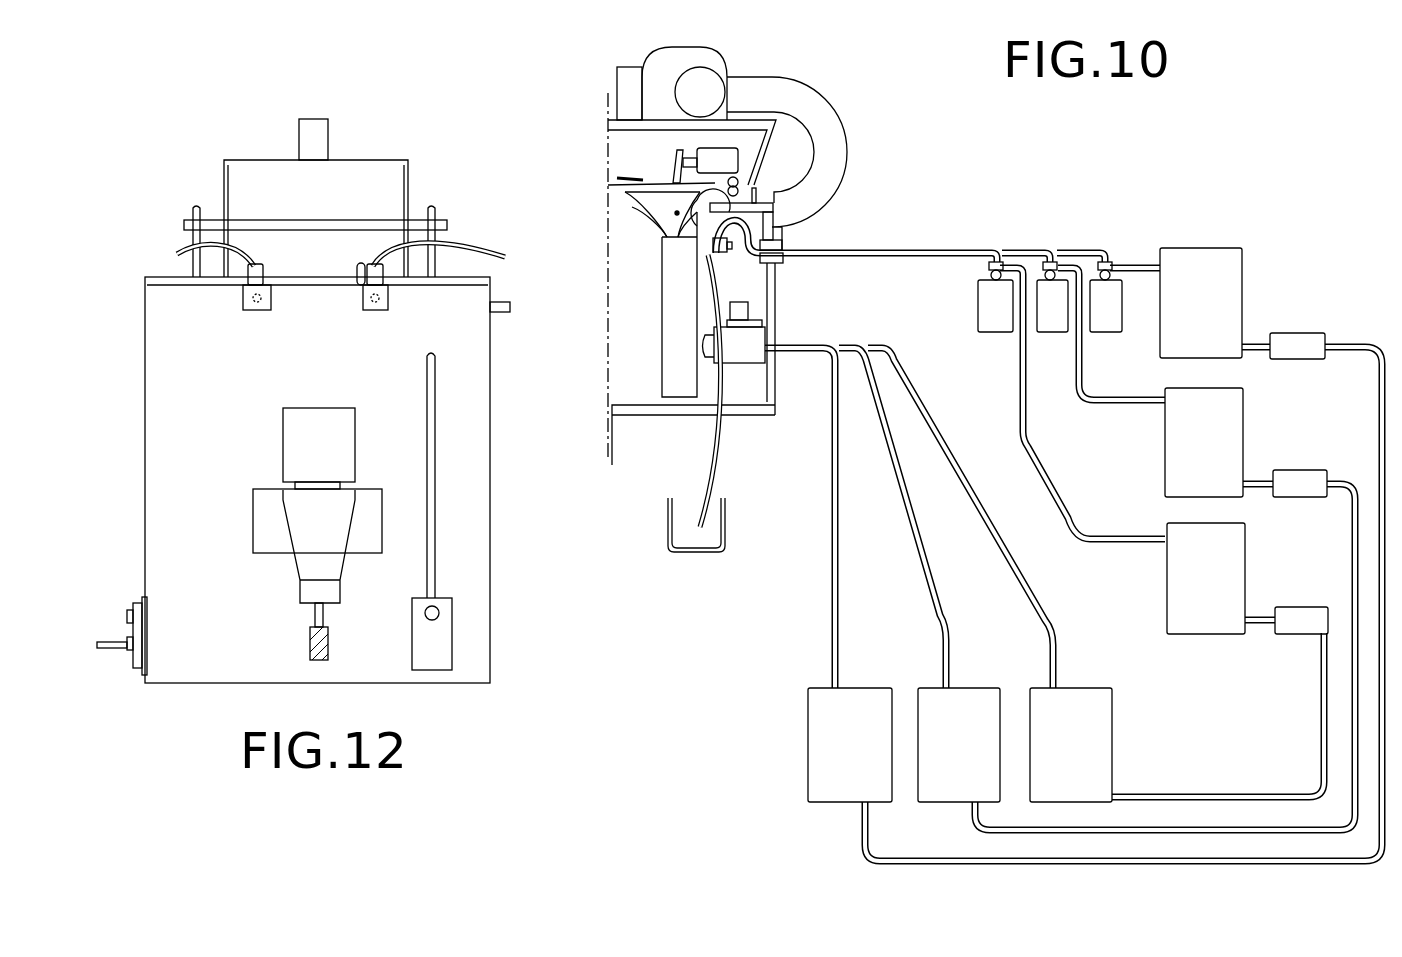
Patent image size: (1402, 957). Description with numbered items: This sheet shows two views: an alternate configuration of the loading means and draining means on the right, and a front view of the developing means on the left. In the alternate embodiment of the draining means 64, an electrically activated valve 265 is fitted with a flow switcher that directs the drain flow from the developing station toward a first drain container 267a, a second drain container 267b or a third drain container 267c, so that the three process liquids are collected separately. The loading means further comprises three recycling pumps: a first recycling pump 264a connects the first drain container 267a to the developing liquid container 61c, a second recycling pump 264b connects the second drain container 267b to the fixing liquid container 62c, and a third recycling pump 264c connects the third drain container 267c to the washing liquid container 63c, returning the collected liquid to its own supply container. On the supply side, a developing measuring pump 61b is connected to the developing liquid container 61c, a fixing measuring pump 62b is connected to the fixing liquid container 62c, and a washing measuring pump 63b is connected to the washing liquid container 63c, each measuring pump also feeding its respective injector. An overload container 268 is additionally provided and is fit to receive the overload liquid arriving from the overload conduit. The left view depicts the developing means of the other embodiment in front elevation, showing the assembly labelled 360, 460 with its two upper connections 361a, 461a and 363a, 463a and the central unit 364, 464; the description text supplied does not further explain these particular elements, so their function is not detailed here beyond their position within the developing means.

In FIG. 12, the cleaning tank assembly 360 is at (303, 401).
In FIG. 12, the cleaning tank assembly 460 is at (292, 318).
In FIG. 12, the connector 361a is at (168, 351).
In FIG. 12, the connector 461a is at (243, 302).
In FIG. 12, the connector 363a is at (475, 331).
In FIG. 12, the connector 463a is at (382, 302).
In FIG. 12, the cartridge holder 364 is at (223, 505).
In FIG. 12, the cartridge holder 464 is at (238, 505).
In FIG. 10, the draining means 64 is at (798, 389).
In FIG. 10, the electrically activated valve 265 is at (747, 352).
In FIG. 10, the overload container 268 is at (676, 527).
In FIG. 10, the developing measuring pump 61b is at (985, 300).
In FIG. 10, the fixing measuring pump 62b is at (1050, 325).
In FIG. 10, the washing measuring pump 63b is at (1106, 322).
In FIG. 10, the developing liquid container 61c is at (1230, 557).
In FIG. 10, the fixing liquid container 62c is at (1227, 412).
In FIG. 10, the washing liquid container 63c is at (1197, 264).
In FIG. 10, the first recycling pump 264a is at (1298, 615).
In FIG. 10, the second recycling pump 264b is at (1295, 477).
In FIG. 10, the third recycling pump 264c is at (1292, 338).
In FIG. 10, the first drain container 267a is at (1087, 744).
In FIG. 10, the second drain container 267b is at (935, 703).
In FIG. 10, the third drain container 267c is at (823, 734).